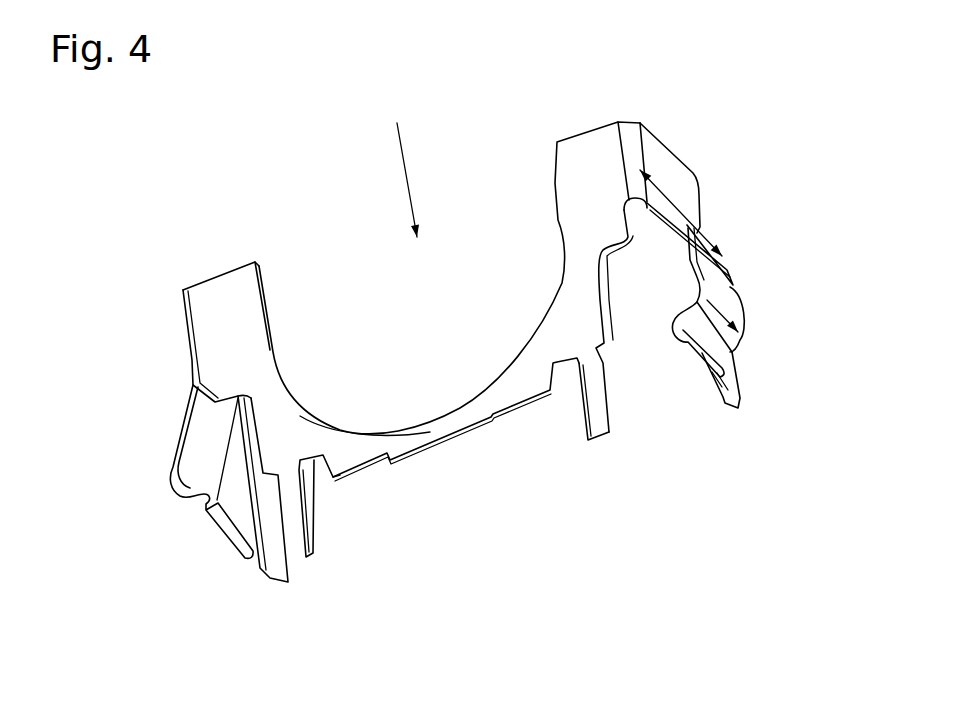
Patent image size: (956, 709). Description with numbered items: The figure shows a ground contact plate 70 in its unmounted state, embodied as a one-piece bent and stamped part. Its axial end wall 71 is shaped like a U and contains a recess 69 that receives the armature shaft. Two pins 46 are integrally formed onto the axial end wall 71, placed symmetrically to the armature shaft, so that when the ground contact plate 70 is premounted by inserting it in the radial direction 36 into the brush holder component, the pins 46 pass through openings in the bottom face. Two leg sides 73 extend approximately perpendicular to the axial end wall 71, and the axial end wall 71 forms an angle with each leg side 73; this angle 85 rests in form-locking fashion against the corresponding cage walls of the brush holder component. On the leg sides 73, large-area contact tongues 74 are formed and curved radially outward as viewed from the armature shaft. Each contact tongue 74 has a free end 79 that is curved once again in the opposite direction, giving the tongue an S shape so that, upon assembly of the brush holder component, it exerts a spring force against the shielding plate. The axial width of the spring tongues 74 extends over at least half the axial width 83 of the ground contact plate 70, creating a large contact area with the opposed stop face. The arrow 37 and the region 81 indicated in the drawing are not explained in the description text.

The ground contact plate 70 is at (462, 343).
The radial direction 36 is at (398, 147).
The contact direction 37 is at (650, 93).
The pins 46 is at (592, 424).
The recess 69 is at (348, 430).
The axial end wall 71 is at (575, 160).
The leg sides 73 is at (695, 201).
The contact tongues 74 is at (727, 300).
The free end 79 is at (695, 358).
The contact region 81 is at (722, 316).
The axial width of the ground contact plate 83 is at (701, 227).
The angle 85 is at (630, 118).